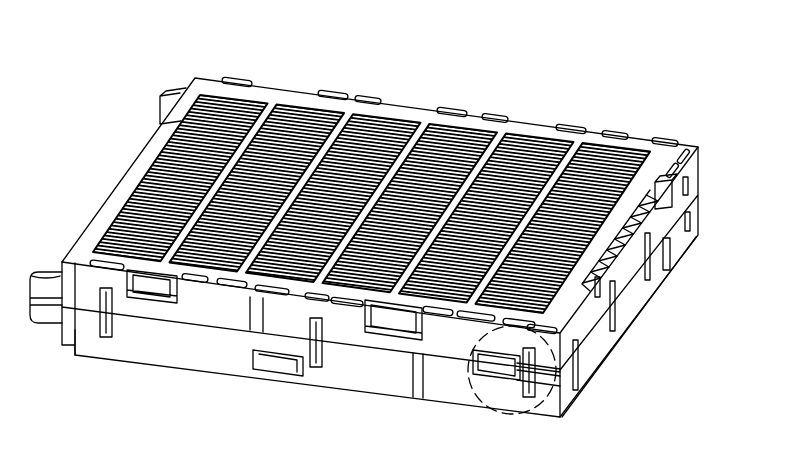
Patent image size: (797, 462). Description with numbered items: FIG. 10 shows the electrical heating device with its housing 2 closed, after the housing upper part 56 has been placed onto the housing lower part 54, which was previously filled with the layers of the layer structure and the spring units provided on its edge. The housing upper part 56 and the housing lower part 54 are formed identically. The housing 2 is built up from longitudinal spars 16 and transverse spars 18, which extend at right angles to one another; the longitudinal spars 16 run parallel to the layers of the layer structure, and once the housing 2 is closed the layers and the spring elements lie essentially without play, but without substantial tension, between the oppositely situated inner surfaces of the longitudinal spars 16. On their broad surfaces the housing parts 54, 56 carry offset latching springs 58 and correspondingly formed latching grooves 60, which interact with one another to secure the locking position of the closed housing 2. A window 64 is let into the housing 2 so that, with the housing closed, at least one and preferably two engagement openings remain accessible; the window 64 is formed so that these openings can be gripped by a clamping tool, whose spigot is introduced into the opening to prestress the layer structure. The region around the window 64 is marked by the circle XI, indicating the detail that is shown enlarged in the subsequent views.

The housing 2 is at (469, 56).
The longitudinal spars 16 is at (511, 112).
The transverse spars 18 is at (100, 204).
The housing lower part 54 is at (636, 319).
The housing upper part 56 is at (660, 133).
The latching springs 58 is at (152, 309).
The latching grooves 60 is at (155, 326).
The window 64 is at (490, 369).
The detail view indicator XI is at (528, 409).